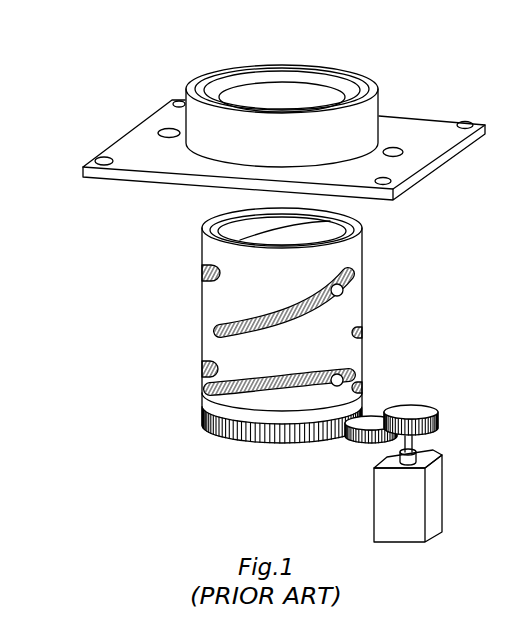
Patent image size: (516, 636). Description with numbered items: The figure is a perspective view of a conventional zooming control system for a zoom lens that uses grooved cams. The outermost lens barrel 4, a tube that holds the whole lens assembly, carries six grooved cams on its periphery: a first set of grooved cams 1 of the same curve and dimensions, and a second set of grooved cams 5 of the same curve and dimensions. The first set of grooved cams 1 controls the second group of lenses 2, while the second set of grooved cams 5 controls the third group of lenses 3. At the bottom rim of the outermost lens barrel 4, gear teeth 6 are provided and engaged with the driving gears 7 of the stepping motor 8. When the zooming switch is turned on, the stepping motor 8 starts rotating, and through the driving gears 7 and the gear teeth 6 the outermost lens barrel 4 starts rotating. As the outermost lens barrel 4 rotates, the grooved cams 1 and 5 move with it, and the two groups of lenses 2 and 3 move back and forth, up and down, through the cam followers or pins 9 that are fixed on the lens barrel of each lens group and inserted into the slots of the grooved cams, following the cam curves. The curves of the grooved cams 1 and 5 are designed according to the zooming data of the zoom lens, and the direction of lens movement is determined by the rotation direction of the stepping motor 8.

The first set of grooved cams 1 is at (213, 335).
The second group of lenses 2 is at (290, 240).
The third group of lenses 3 is at (290, 240).
The outermost lens barrel 4 is at (330, 317).
The second set of grooved cams 5 is at (200, 421).
The gear teeth 6 is at (300, 444).
The driving gears 7 is at (393, 438).
The stepping motor 8 is at (434, 505).
The cam followers (pins) 9 is at (343, 380).